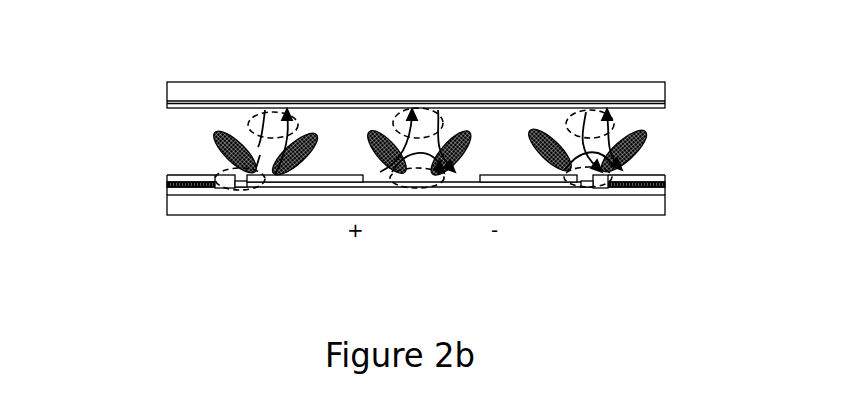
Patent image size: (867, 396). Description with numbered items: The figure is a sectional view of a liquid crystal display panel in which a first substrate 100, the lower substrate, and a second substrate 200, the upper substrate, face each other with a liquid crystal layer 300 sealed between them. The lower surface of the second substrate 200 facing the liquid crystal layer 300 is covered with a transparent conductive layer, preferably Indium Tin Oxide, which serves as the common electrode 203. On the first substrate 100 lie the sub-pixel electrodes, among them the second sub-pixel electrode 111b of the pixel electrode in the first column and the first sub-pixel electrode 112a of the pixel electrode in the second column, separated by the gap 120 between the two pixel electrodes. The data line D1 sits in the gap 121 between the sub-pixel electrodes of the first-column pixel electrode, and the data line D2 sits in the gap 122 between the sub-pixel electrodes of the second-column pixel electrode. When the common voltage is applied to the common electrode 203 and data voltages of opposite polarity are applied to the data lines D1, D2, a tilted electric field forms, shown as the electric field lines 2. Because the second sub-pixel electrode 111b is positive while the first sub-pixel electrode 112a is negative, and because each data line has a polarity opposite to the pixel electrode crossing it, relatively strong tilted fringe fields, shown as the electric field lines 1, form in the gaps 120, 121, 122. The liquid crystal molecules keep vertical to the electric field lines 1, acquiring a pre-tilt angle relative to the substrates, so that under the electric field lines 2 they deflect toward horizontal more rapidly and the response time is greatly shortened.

The electric field lines 1 is at (447, 178).
The electric field lines 2 is at (293, 123).
The first substrate 100 is at (665, 213).
The second sub-pixel electrode 111b is at (323, 178).
The first sub-pixel electrode 112a is at (527, 178).
The gap 120 is at (403, 183).
The gap 121 is at (243, 188).
The gap 122 is at (600, 188).
The second substrate 200 is at (167, 87).
The common electrode 203 is at (665, 103).
The liquid crystal layer 300 is at (648, 129).
The data line D1 is at (167, 188).
The data line D2 is at (665, 179).